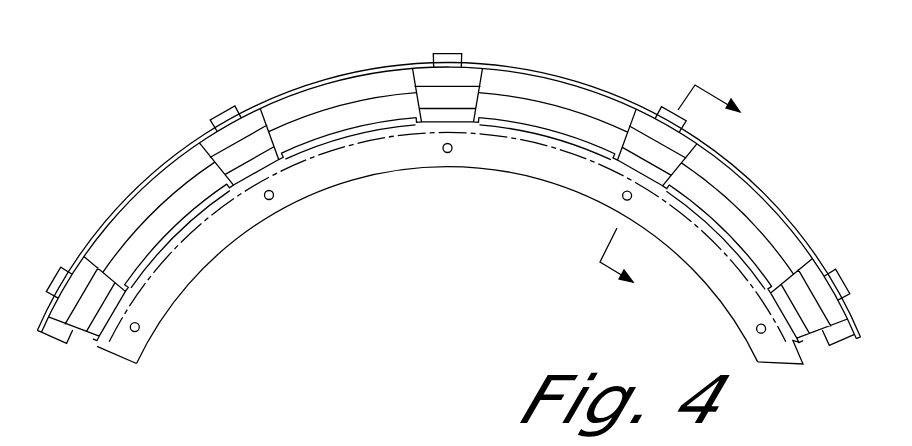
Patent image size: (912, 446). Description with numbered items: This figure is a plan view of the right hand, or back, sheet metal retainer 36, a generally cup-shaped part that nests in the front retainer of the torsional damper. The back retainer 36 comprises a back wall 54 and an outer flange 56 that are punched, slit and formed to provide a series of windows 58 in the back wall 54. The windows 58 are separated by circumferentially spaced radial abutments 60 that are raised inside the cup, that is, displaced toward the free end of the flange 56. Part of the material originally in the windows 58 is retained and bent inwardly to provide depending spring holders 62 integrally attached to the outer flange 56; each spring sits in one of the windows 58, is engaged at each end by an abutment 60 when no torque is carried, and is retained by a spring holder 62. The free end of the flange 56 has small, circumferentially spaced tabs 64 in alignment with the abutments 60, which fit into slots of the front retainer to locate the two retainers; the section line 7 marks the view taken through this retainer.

The back sheet metal retainer 36 is at (553, 167).
The back wall 54 is at (422, 150).
The outer flange 56 is at (553, 70).
The windows 58 is at (157, 238).
The radial abutments 60 is at (250, 140).
The depending spring holders 62 is at (143, 200).
The tabs 64 is at (218, 112).
The section line 7- 7 is at (656, 183).